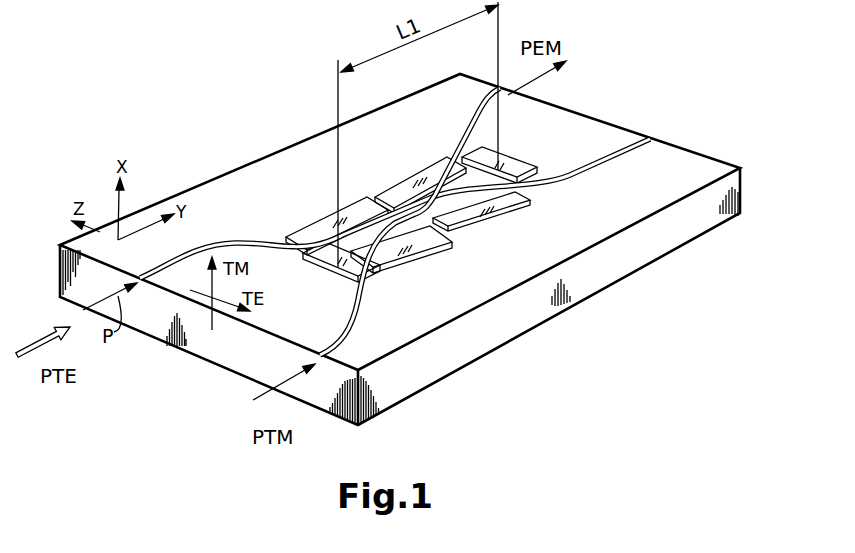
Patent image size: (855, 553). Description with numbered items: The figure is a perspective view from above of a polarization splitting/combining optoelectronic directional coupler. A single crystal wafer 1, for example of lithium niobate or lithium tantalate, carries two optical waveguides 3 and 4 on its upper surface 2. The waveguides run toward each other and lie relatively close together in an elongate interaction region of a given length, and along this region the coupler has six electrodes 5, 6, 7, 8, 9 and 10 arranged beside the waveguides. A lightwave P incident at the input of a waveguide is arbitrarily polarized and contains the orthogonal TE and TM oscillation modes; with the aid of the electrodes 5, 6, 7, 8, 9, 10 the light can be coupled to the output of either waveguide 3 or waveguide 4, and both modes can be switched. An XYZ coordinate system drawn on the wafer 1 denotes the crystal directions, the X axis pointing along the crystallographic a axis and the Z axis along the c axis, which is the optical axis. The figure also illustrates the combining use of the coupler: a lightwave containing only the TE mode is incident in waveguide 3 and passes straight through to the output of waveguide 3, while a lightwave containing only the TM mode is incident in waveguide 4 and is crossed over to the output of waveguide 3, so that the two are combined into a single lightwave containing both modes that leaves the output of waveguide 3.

The single crystal wafer 1 is at (641, 250).
The upper surface 2 is at (690, 172).
The optical waveguide 3 is at (500, 118).
The optical waveguide 4 is at (614, 151).
The electrode 5 is at (318, 230).
The electrode 6 is at (345, 262).
The electrode 7 is at (405, 255).
The electrode 8 is at (478, 219).
The electrode 9 is at (492, 172).
The electrode 10 is at (415, 175).